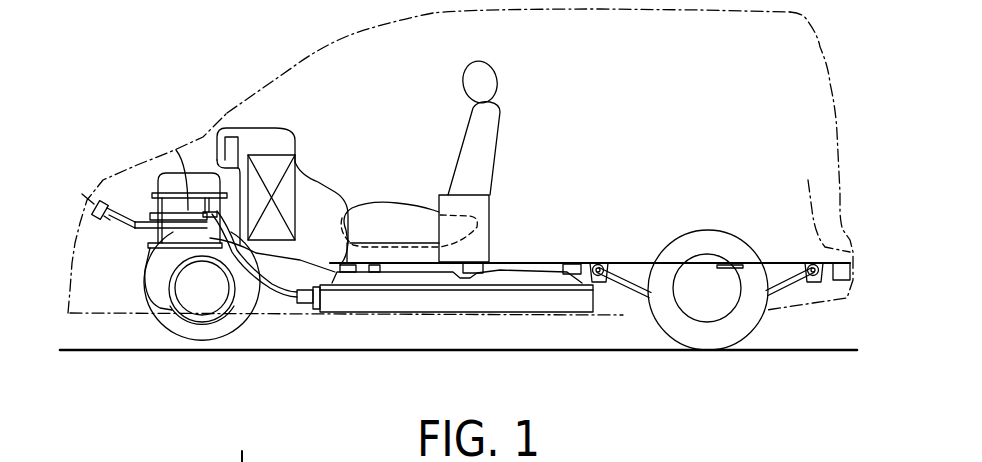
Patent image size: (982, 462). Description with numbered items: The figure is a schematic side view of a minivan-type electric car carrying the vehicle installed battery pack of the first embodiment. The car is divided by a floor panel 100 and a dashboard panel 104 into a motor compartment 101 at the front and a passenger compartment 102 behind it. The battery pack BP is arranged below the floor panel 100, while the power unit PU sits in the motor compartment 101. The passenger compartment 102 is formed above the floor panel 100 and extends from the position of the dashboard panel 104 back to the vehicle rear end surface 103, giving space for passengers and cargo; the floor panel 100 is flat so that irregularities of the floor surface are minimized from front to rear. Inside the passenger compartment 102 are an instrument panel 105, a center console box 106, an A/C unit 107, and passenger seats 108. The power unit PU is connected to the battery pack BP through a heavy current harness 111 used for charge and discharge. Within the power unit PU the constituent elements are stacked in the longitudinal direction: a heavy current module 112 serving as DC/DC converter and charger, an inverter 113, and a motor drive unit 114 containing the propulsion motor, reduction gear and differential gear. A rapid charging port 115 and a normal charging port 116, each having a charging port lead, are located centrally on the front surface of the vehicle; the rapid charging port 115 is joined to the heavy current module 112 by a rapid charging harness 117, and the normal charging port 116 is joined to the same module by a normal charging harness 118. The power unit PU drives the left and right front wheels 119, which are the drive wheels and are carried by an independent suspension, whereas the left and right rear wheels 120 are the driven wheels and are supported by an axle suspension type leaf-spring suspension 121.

The floor panel 100 is at (582, 262).
The motor compartment 101 is at (128, 310).
The passenger compartment 102 is at (424, 101).
The vehicle rear end surface 103 is at (808, 196).
The dashboard panel 104 is at (232, 195).
The instrument panel 105 is at (302, 142).
The center console box 106 is at (387, 244).
The A/C unit 107 is at (298, 205).
The passenger seats 108 is at (498, 130).
The heavy current harness 111 is at (255, 298).
The heavy current module 112 is at (176, 150).
The inverter 113 is at (199, 193).
The motor drive unit 114 is at (158, 292).
The rapid charging port 115 is at (92, 197).
The normal charging port 116 is at (98, 218).
The rapid charging harness 117 is at (124, 212).
The normal charging harness 118 is at (130, 230).
The front wheels 119 is at (222, 332).
The rear wheels 120 is at (734, 327).
The leaf-spring suspension 121 is at (625, 283).
The power unit PU is at (162, 167).
The battery pack BP is at (466, 313).